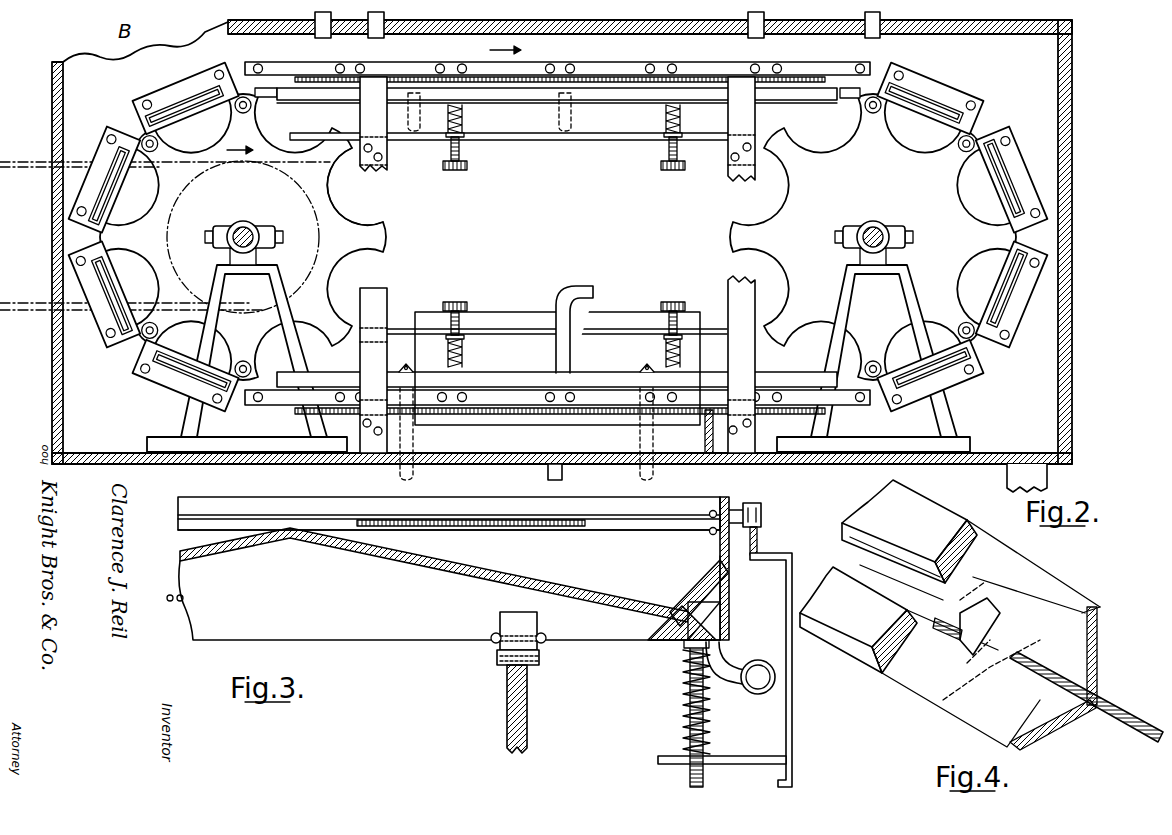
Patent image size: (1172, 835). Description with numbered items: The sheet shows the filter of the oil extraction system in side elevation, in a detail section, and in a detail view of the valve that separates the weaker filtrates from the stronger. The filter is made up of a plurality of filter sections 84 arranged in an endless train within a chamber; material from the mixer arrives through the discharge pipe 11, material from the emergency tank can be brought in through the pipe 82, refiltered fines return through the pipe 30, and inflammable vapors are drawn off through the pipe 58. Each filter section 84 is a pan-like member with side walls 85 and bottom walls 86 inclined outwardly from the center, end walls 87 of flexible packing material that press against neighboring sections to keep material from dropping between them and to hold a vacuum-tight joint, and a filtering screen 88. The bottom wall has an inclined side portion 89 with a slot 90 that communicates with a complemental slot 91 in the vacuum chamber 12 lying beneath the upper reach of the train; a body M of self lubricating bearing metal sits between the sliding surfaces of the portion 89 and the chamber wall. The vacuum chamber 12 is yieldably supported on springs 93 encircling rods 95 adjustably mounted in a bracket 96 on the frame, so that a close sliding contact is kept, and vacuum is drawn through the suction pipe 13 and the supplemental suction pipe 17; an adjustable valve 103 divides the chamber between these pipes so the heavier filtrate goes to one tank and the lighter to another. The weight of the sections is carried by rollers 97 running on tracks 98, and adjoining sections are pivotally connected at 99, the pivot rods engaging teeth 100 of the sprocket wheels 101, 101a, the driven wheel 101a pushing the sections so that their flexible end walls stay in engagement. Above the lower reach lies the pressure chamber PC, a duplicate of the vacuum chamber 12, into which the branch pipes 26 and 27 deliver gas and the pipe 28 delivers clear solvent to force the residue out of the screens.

In FIG. 2, the pipe 82 is at (322, 38).
In FIG. 2, the discharge pipe 11 is at (372, 38).
In FIG. 2, the pipe 30 is at (755, 37).
In FIG. 2, the pipe 58 is at (878, 36).
In FIG. 2, the filter section 84 is at (601, 62).
In FIG. 3, the filter section 84 is at (584, 497).
In FIG. 2, the pivotal connection 99 is at (133, 128).
In FIG. 3, the pivotal connection 99 is at (541, 653).
In FIG. 2, the end wall 87 is at (996, 130).
In FIG. 3, the end wall 87 is at (449, 545).
In FIG. 2, the teeth 100 is at (381, 231).
In FIG. 2, the sprocket wheel 101 is at (873, 237).
In FIG. 2, the sprocket wheel 101a is at (343, 217).
In FIG. 3, the sprocket wheel 101a is at (528, 720).
In FIG. 2, the vacuum chamber 12 is at (520, 93).
In FIG. 3, the vacuum chamber 12 is at (708, 627).
In FIG. 4, the vacuum chamber 12 is at (928, 625).
In FIG. 2, the suction pipe 13 is at (415, 128).
In FIG. 2, the supplemental suction pipe 17 is at (568, 126).
In FIG. 2, the pressure chamber PC is at (473, 375).
In FIG. 2, the pipe 28 is at (591, 291).
In FIG. 2, the branch pipe 26 is at (414, 440).
In FIG. 2, the branch pipe 27 is at (640, 440).
In FIG. 3, the branch pipe 27 is at (776, 680).
In FIG. 3, the side wall 85 is at (744, 497).
In FIG. 3, the filtering screen 88 is at (483, 527).
In FIG. 3, the bottom wall 86 is at (429, 561).
In FIG. 3, the inclined side portion 89 is at (714, 565).
In FIG. 3, the slot 90 is at (689, 598).
In FIG. 4, the slot 90 is at (880, 552).
In FIG. 3, the complemental slot 91 is at (706, 607).
In FIG. 4, the complemental slot 91 is at (960, 606).
In FIG. 3, the body of self lubricating bearing metal M is at (653, 622).
In FIG. 4, the body of self lubricating bearing metal M is at (888, 576).
In FIG. 3, the spring 93 is at (687, 685).
In FIG. 3, the rod 95 is at (687, 713).
In FIG. 3, the bracket 96 is at (733, 756).
In FIG. 3, the roller 97 is at (762, 512).
In FIG. 3, the track 98 is at (766, 536).
In FIG. 4, the valve 103 is at (1043, 588).